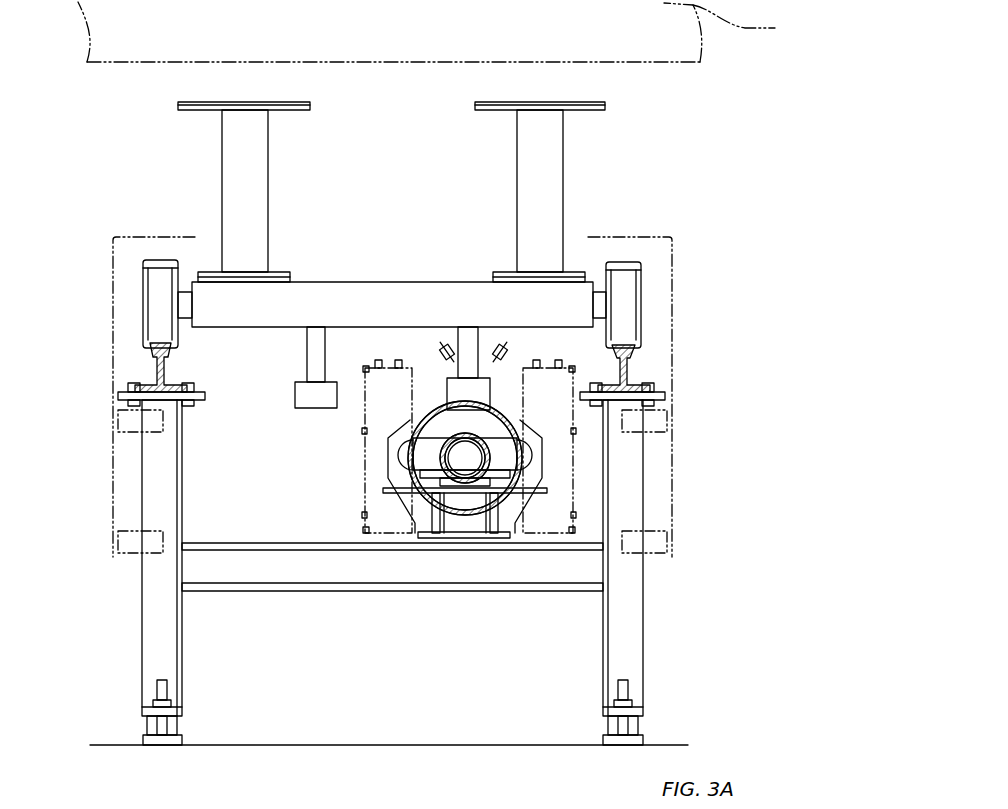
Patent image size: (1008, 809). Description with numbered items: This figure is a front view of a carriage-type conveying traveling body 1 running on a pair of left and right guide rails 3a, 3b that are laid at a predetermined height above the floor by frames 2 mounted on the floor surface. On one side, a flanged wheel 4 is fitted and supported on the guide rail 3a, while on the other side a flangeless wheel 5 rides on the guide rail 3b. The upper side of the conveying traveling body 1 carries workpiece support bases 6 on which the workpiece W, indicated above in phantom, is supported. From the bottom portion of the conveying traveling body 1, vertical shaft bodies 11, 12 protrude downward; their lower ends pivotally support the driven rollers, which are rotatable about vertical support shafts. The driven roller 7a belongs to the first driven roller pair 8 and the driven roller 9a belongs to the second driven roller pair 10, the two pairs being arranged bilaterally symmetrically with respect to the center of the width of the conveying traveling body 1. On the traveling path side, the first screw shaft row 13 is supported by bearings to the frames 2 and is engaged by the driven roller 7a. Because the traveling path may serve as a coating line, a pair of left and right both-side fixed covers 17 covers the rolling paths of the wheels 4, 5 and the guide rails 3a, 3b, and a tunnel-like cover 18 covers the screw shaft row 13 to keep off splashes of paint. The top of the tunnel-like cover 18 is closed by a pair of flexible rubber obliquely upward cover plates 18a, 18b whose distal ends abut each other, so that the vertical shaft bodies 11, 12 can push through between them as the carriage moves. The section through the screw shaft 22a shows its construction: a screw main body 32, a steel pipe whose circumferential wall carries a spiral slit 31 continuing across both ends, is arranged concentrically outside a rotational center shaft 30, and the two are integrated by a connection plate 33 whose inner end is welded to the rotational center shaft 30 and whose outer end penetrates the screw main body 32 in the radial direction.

The workpiece W is at (439, 32).
The carriage-type conveying traveling body 1 is at (373, 283).
The frame 2 is at (140, 590).
The guide rail 3a is at (160, 365).
The guide rail 3b is at (628, 360).
The flanged wheel 4 is at (155, 305).
The flangeless wheel 5 is at (640, 297).
The workpiece support base 6 is at (248, 102).
The driven roller 7a is at (455, 395).
The first driven roller pair 8 is at (497, 387).
The driven roller 9a is at (305, 403).
The second driven roller pair 10 is at (285, 393).
The vertical shaft body 11 is at (466, 330).
The vertical shaft body 12 is at (312, 330).
The first screw shaft row 13 is at (473, 520).
The both-side fixed cover 17 is at (110, 258).
The tunnel-like cover 18 is at (575, 500).
The obliquely upward cover plate 18a is at (500, 340).
The obliquely upward cover plate 18b is at (447, 348).
The screw shaft 22a is at (420, 503).
The rotational center shaft 30 is at (470, 497).
The spiral slit 31 is at (425, 456).
The screw main body 32 is at (510, 493).
The connection plate 33 is at (405, 455).